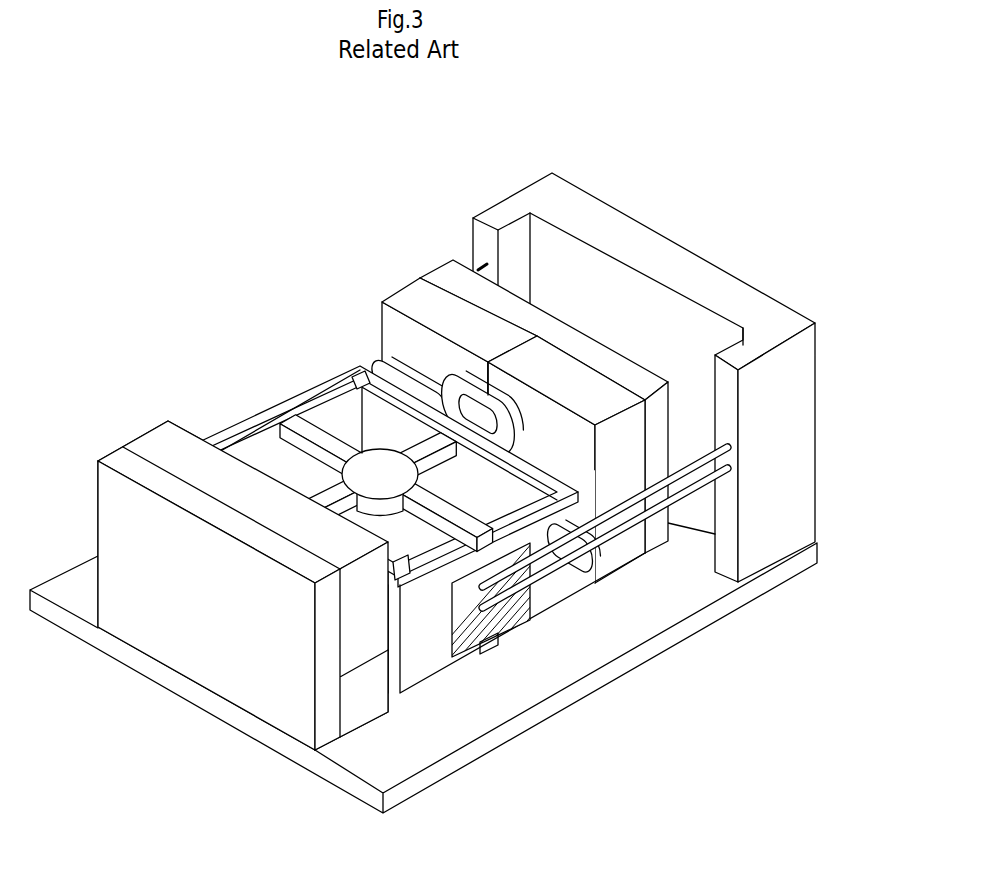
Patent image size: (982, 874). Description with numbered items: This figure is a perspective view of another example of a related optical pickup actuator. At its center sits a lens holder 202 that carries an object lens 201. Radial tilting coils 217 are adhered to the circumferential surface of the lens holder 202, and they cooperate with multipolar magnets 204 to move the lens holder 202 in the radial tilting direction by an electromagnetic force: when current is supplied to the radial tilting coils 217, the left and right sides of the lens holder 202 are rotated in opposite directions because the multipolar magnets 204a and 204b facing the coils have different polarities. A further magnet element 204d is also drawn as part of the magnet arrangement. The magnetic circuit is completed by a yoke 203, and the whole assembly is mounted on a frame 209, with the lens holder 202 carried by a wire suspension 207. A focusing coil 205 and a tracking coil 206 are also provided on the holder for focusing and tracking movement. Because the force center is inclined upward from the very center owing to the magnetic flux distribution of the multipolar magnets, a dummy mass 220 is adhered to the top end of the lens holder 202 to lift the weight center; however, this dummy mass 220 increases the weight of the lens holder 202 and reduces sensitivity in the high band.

The object lens 201 is at (377, 476).
The lens holder 202 is at (343, 417).
The yoke 203 is at (637, 368).
The multipolar magnets 204 is at (511, 345).
The multipolar magnet 204a is at (423, 295).
The multipolar magnet 204b is at (571, 375).
The fourth magnet 204d is at (373, 697).
The focusing coil 205 is at (370, 362).
The tracking coil 206 is at (480, 392).
The wire suspension 207 is at (648, 527).
The frame 209 is at (585, 207).
The radial tilting coils 217 is at (280, 410).
The dummy mass 220 is at (354, 372).